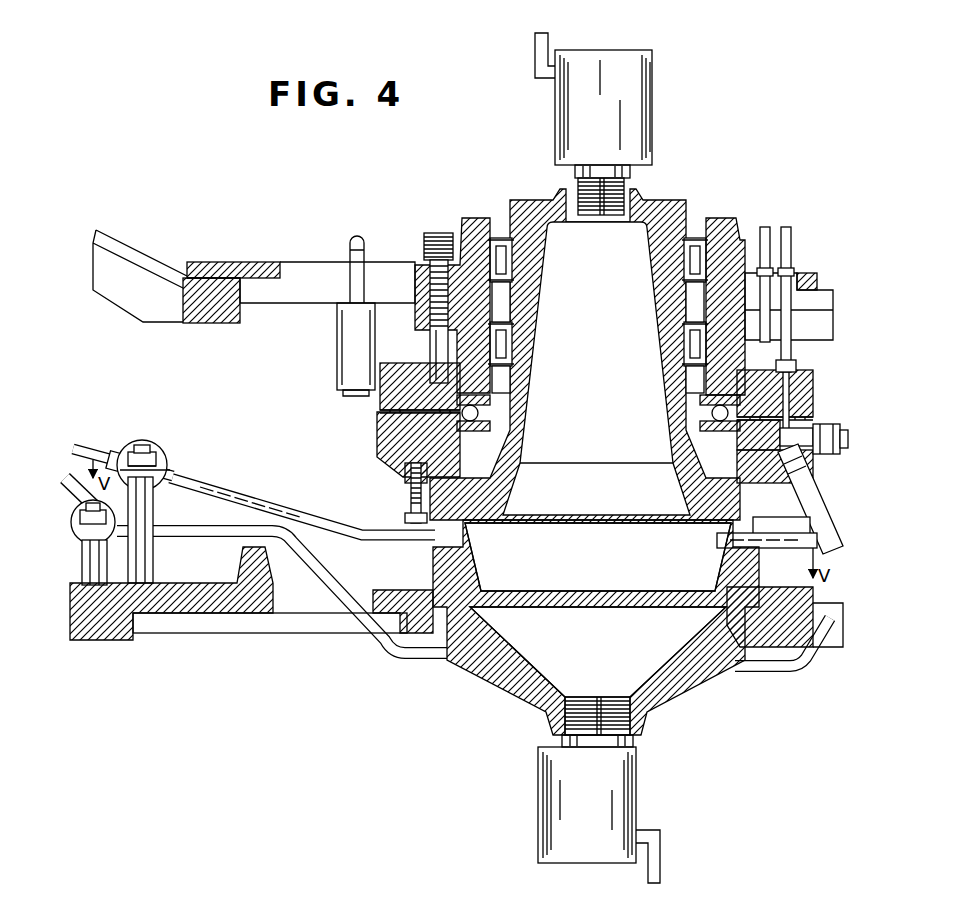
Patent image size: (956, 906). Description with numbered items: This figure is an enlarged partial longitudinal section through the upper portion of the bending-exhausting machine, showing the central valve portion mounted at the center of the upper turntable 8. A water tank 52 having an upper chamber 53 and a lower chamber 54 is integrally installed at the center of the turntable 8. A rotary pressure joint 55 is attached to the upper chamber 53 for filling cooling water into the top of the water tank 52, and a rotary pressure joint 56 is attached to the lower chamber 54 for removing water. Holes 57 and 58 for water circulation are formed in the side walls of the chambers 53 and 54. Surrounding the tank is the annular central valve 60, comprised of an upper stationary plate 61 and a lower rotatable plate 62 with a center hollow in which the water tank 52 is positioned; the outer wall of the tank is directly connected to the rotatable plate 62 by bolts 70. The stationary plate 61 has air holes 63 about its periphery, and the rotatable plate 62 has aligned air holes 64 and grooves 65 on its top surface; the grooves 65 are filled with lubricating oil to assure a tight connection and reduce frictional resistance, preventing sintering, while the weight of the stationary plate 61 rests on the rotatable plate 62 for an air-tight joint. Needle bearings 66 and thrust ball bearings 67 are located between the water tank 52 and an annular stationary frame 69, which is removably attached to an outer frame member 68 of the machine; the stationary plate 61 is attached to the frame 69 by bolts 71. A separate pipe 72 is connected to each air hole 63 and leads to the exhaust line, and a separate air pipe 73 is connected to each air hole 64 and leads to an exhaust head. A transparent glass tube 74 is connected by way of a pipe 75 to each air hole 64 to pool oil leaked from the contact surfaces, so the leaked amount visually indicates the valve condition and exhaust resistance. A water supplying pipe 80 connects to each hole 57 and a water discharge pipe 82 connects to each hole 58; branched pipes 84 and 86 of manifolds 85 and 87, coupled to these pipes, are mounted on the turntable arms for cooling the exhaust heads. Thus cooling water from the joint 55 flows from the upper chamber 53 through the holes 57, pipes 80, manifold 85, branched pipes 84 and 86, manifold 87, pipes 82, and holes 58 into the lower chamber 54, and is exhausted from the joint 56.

The upper turntable 8 is at (200, 585).
The water tank 52 is at (548, 206).
The upper chamber 53 is at (612, 334).
The lower chamber 54 is at (607, 664).
The rotary pressure joint 55 is at (605, 55).
The rotary pressure joint 56 is at (538, 820).
The holes 57 is at (478, 530).
The holes 58 is at (478, 666).
The central valve 60 is at (360, 433).
The stationary plate 61 is at (412, 366).
The rotatable plate 62 is at (377, 452).
The air holes 63 is at (805, 366).
The air holes 64 is at (775, 466).
The grooves 65 is at (380, 406).
The needle bearings 66 is at (508, 260).
The thrust ball bearings 67 is at (482, 430).
The outer frame member 68 is at (222, 325).
The annular stationary frame 69 is at (272, 263).
The bolts 70 is at (403, 485).
The bolts 71 is at (437, 233).
The pipe 72 is at (763, 228).
The air pipe 73 is at (828, 426).
The transparent glass tube 74 is at (783, 506).
The pipe 75 is at (815, 468).
The water supplying pipe 80 is at (264, 510).
The water discharge pipe 82 is at (330, 578).
The branched pipe 84 is at (100, 428).
The manifold 85 is at (163, 457).
The branched pipe 86 is at (72, 538).
The manifold 87 is at (130, 519).